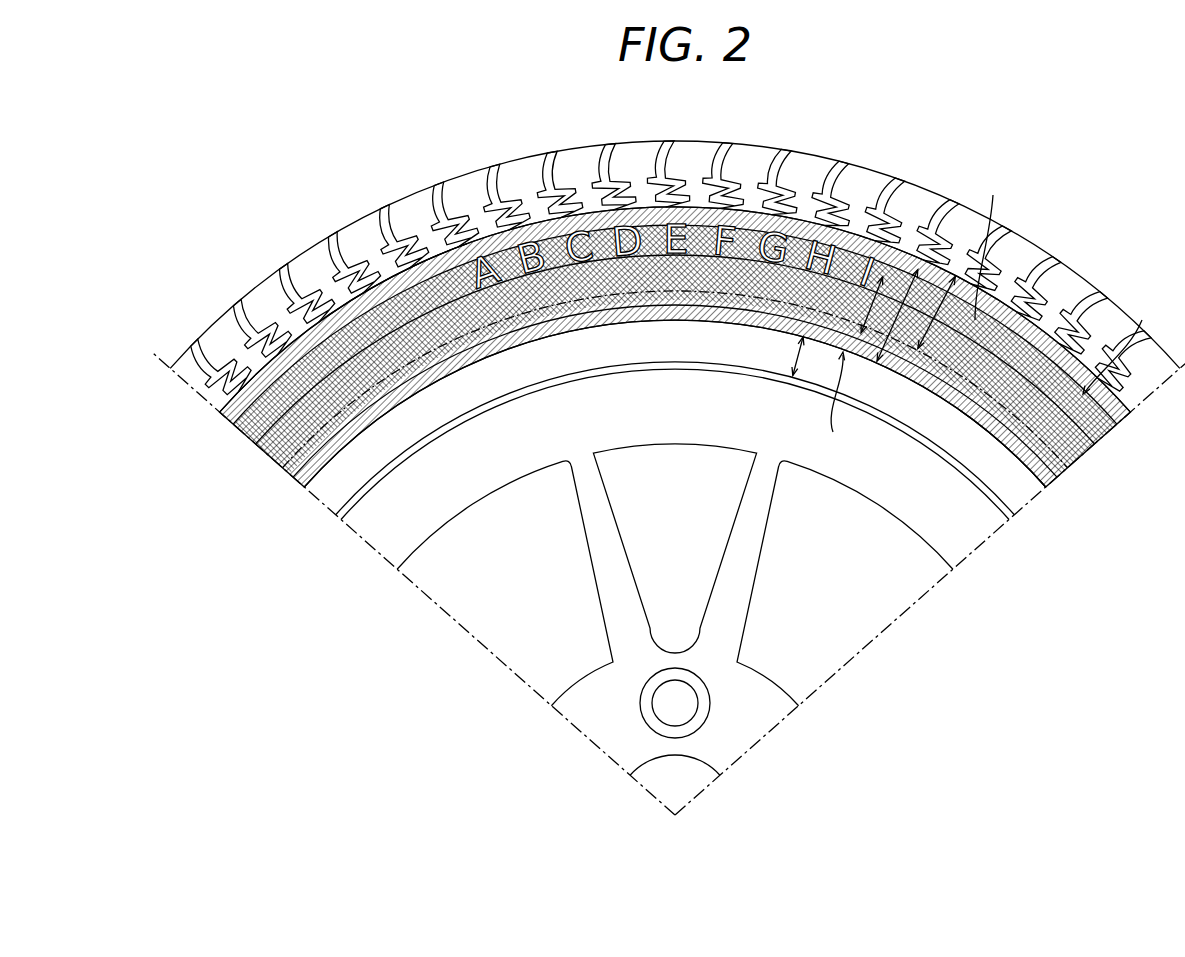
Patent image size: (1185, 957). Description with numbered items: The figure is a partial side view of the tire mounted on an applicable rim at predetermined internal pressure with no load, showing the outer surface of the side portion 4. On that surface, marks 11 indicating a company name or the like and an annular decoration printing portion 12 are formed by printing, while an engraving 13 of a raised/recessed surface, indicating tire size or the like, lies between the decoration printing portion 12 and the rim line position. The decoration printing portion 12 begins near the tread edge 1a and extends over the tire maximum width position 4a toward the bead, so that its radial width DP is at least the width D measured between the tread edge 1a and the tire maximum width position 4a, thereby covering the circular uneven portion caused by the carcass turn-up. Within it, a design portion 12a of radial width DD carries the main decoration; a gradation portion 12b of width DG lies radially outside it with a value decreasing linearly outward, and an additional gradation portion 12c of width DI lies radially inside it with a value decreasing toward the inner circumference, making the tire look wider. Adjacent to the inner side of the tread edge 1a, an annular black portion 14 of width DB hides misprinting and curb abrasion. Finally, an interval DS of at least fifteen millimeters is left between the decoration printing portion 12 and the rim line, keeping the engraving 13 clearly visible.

The tread edge 1a is at (490, 232).
The marks 11 is at (714, 221).
The decoration printing portion 12 is at (335, 157).
The design portion 12a is at (352, 378).
The gradation portion 12b is at (356, 319).
The gradation portion 12c is at (306, 448).
The black portion 14 is at (392, 280).
The side portion 4 is at (1032, 358).
The tire maximum width position 4a is at (1082, 457).
The engraving 13 is at (673, 362).
The width of design portion in tire radial direction DD is at (872, 300).
The width of decoration printing portion in tire radial direction DP is at (903, 290).
The width between tread edge and tire maximum width position D is at (989, 248).
The width of gradation portion in tire radial direction DG is at (1010, 330).
The width of black portion in tire radial direction DB is at (1121, 343).
The interval between decoration printing portion and rim line position DS is at (798, 365).
The width of inner gradation portion in tire radial direction DI is at (833, 406).